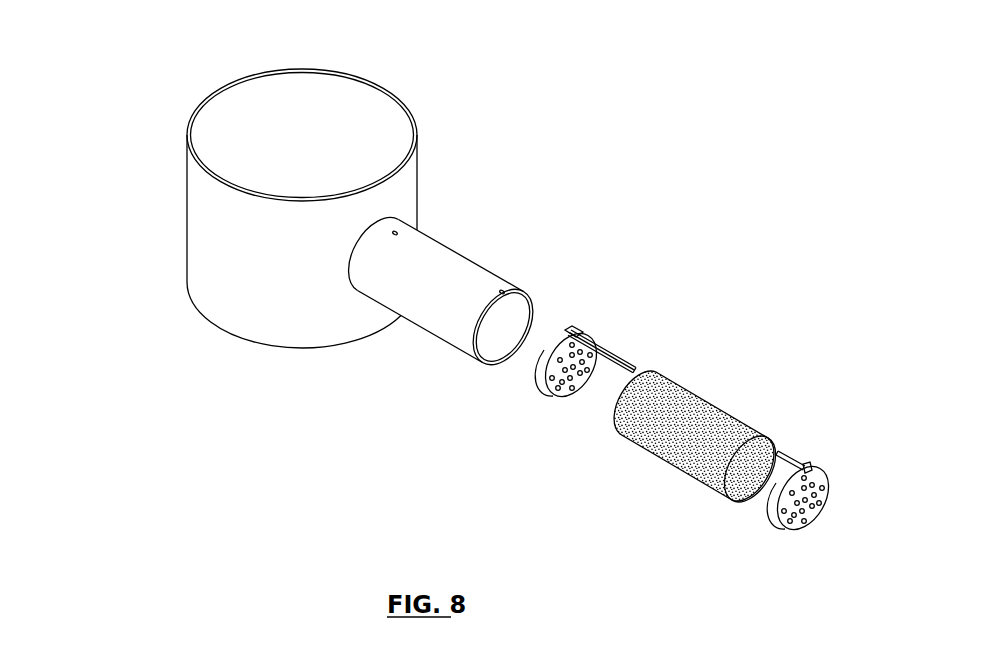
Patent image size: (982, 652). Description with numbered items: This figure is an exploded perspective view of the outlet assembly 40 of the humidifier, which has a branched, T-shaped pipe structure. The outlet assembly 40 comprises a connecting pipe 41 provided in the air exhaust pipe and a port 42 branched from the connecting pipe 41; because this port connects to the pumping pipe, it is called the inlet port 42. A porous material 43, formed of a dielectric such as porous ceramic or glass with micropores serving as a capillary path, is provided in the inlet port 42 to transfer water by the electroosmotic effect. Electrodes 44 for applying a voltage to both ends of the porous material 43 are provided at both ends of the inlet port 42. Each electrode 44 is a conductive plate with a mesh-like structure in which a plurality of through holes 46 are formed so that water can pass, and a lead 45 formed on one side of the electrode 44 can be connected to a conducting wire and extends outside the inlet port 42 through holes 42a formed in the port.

The outlet assembly 40 is at (518, 172).
The connecting pipe 41 is at (187, 185).
The inlet port 42 is at (467, 270).
The holes 42a is at (396, 230).
The porous material 43 is at (707, 413).
The electrodes 44 is at (555, 392).
The leads 45 is at (615, 353).
The through holes 46 is at (572, 392).